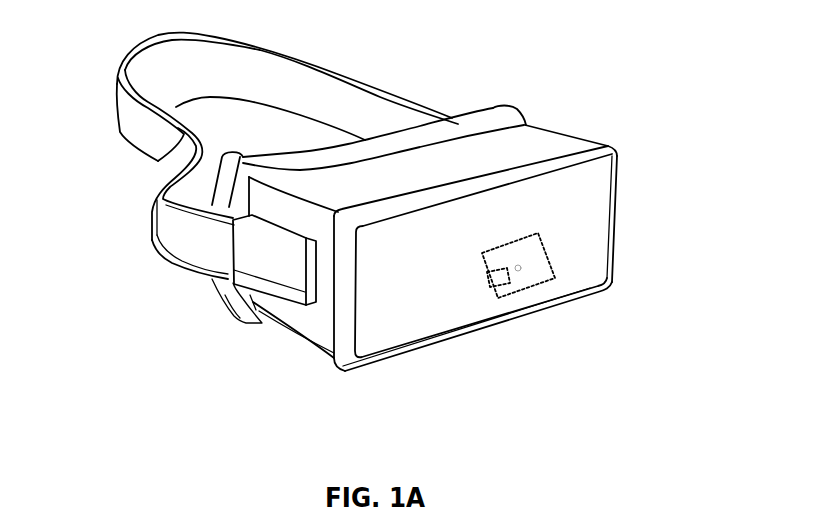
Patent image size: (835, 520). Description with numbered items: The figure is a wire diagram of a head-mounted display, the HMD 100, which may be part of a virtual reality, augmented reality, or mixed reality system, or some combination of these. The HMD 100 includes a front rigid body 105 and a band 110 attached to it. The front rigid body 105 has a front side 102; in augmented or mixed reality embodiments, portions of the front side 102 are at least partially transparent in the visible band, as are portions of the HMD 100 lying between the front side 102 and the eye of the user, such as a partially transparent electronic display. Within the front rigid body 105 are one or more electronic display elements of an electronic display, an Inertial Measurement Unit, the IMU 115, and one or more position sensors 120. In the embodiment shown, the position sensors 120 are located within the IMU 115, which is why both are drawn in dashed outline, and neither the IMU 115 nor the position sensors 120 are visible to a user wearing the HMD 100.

The head-mounted display (HMD) 100 is at (63, 36).
The band 110 is at (372, 82).
The front rigid body 105 is at (616, 151).
The front side 102 is at (537, 192).
The Inertial Measurement Unit (IMU) 115 is at (557, 277).
The position sensors 120 is at (503, 273).